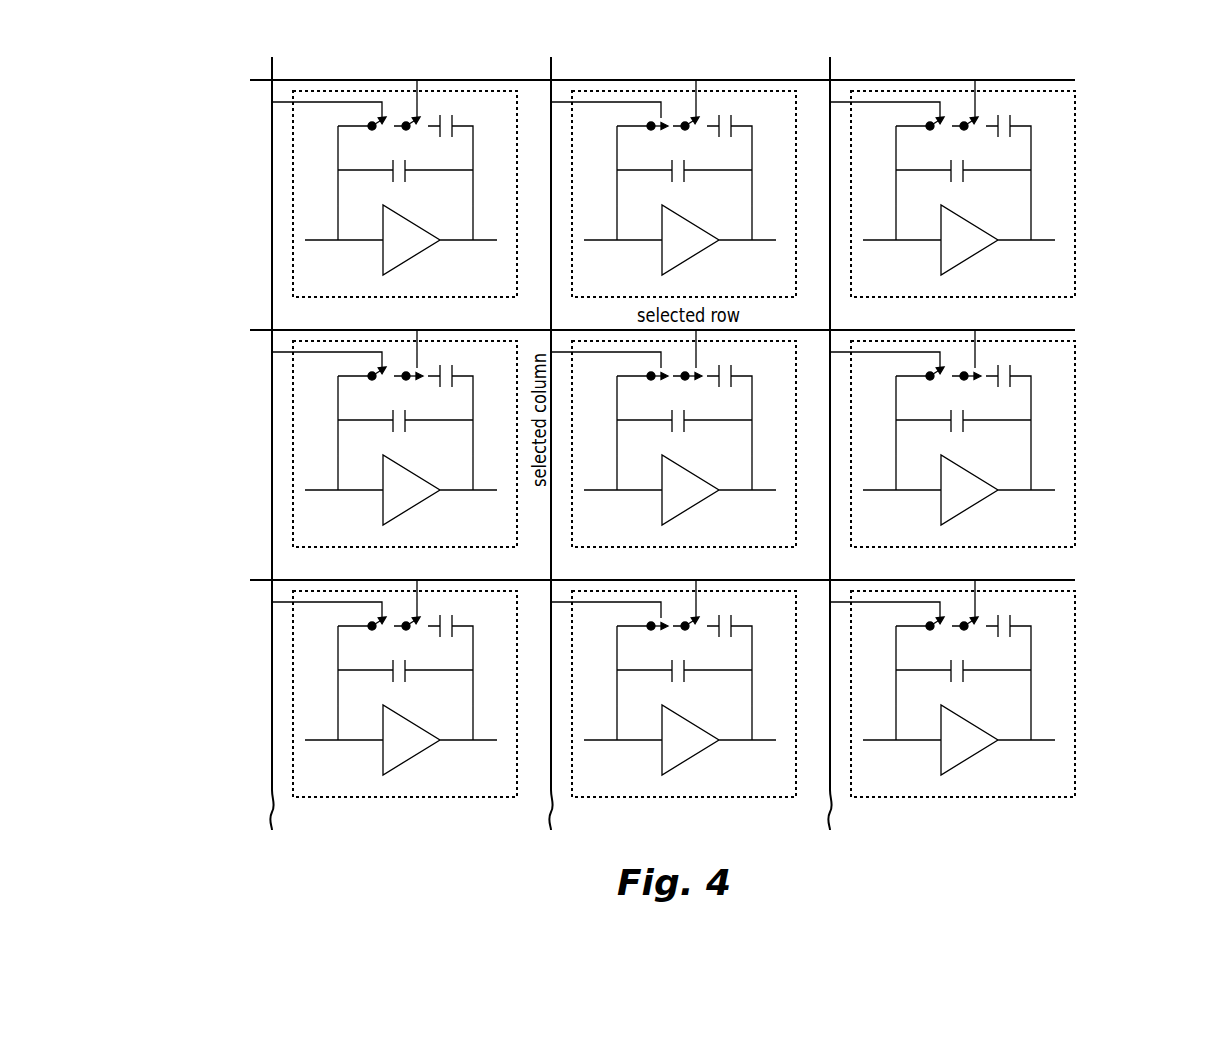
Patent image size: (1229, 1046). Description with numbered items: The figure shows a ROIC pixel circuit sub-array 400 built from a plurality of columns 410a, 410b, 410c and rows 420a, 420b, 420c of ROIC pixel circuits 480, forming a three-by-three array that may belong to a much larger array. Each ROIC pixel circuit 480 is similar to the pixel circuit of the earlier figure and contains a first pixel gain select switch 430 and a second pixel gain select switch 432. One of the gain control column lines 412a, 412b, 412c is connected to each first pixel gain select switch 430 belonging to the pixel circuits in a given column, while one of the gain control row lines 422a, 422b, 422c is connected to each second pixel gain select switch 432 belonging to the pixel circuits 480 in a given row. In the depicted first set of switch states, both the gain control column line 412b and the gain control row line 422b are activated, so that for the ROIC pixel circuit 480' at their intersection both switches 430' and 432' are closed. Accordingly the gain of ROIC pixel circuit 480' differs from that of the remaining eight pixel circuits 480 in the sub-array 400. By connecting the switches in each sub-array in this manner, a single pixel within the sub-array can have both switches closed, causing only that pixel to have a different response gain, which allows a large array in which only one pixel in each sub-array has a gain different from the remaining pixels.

The ROIC pixel circuit sub-array 400 is at (1226, 65).
The column 410a is at (406, 70).
The column 410b is at (674, 70).
The column 410c is at (945, 69).
The gain control column line 412a is at (273, 462).
The gain control column line 412b is at (555, 462).
The gain control column line 412c is at (831, 462).
The row 420a is at (203, 687).
The row 420b is at (203, 437).
The row 420c is at (203, 187).
The gain control row line 422a is at (258, 581).
The gain control row line 422b is at (258, 331).
The gain control row line 422c is at (258, 81).
The first pixel gain select switch 430 is at (624, 373).
The first pixel gain select switch of selected pixel circuit 430' is at (624, 413).
The second pixel gain select switch 432 is at (705, 373).
The second pixel gain select switch of selected pixel circuit 432' is at (737, 413).
The ROIC pixel circuit 480 is at (679, 408).
The selected ROIC pixel circuit 480' is at (852, 438).